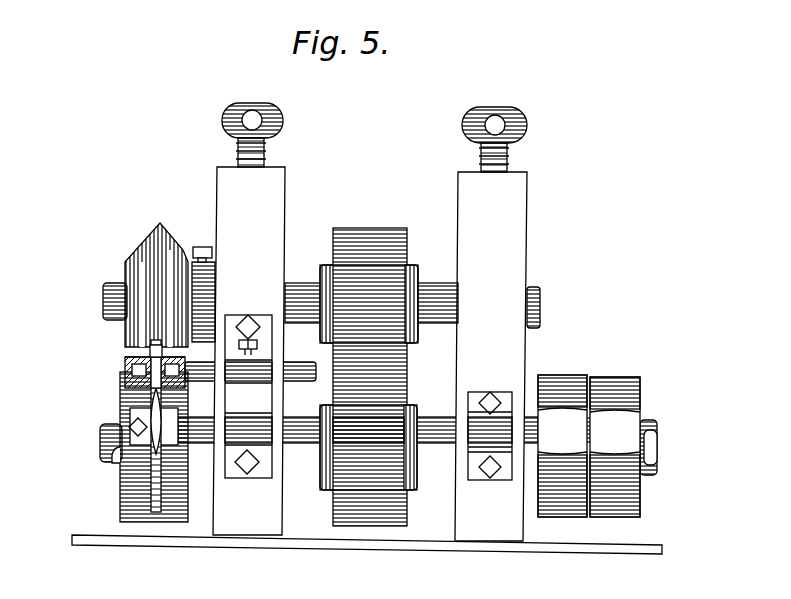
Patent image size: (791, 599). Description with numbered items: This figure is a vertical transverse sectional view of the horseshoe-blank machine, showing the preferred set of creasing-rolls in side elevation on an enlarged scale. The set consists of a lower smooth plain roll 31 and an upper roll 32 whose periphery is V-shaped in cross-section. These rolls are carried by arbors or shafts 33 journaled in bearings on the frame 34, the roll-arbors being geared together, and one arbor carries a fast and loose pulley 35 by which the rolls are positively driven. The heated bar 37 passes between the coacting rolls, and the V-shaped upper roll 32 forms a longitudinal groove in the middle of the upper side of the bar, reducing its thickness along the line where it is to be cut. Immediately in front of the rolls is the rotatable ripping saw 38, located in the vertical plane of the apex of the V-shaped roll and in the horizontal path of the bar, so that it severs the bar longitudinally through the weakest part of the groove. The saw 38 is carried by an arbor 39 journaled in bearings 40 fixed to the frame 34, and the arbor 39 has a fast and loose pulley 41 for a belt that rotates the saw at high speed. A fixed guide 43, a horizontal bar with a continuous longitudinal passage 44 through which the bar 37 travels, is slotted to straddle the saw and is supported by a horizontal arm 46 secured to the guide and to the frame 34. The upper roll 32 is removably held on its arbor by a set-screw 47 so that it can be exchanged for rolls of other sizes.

The lower smooth plain roll 31 is at (120, 498).
The upper roll 32 is at (143, 270).
The arbors or shafts 33 is at (302, 482).
The frame 34 is at (370, 322).
The fast and loose pulley 35 is at (592, 512).
The bar 37 is at (125, 370).
The longitudinally cutting or ripping saw 38 is at (152, 405).
The arbor or shaft 39 is at (288, 436).
The bearings 40 is at (485, 388).
The fast and loose pulley 41 is at (589, 434).
The fixed guide 43 is at (125, 357).
The longitudinal continuous passage 44 is at (127, 361).
The horizontal arm 46 is at (203, 358).
The set-screw 47 is at (201, 249).